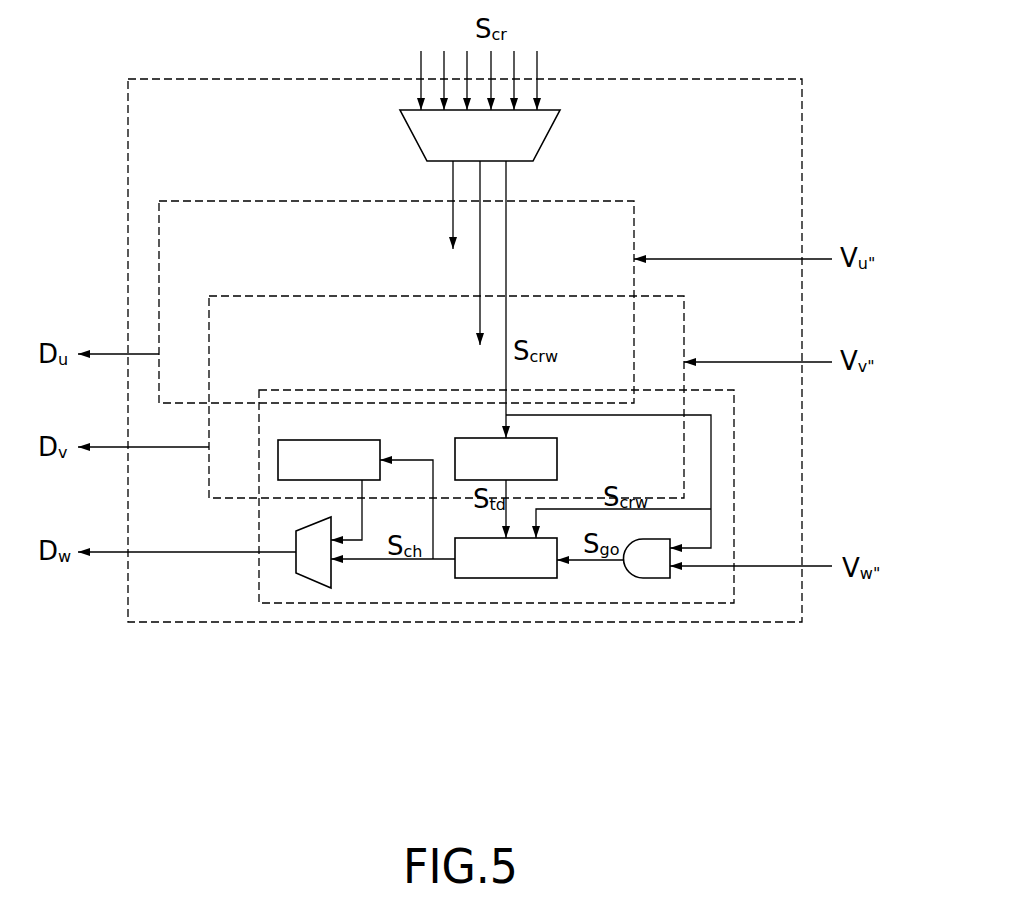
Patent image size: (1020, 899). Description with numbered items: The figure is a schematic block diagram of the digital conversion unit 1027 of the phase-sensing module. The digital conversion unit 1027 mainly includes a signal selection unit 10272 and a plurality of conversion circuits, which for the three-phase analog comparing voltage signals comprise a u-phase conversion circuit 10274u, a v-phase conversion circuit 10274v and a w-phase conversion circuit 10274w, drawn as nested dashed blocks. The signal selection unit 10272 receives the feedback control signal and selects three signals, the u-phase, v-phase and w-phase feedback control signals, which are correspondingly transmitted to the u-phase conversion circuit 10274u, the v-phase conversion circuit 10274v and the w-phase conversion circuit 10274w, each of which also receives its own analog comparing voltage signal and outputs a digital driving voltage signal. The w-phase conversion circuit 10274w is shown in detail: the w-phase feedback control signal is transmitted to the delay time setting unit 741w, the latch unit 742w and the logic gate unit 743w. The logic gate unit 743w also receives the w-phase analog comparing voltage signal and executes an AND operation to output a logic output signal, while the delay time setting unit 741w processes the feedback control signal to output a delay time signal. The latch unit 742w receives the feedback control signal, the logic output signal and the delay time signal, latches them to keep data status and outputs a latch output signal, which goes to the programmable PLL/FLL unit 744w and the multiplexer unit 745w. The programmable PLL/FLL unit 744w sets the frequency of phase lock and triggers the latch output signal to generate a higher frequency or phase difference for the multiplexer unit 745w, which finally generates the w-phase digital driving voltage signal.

The digital conversion unit 1027 is at (709, 106).
The signal selection unit 10272 is at (553, 128).
The u-phase conversion circuit 10274u is at (610, 232).
The v-phase conversion circuit 10274v is at (660, 328).
The w-phase conversion circuit 10274w is at (722, 468).
The delay time setting unit 741w is at (545, 458).
The latch unit 742w is at (532, 563).
The logic gate unit 743w is at (660, 568).
The programmable PLL/FLL unit 744w is at (292, 466).
The multiplexer unit 745w is at (317, 574).